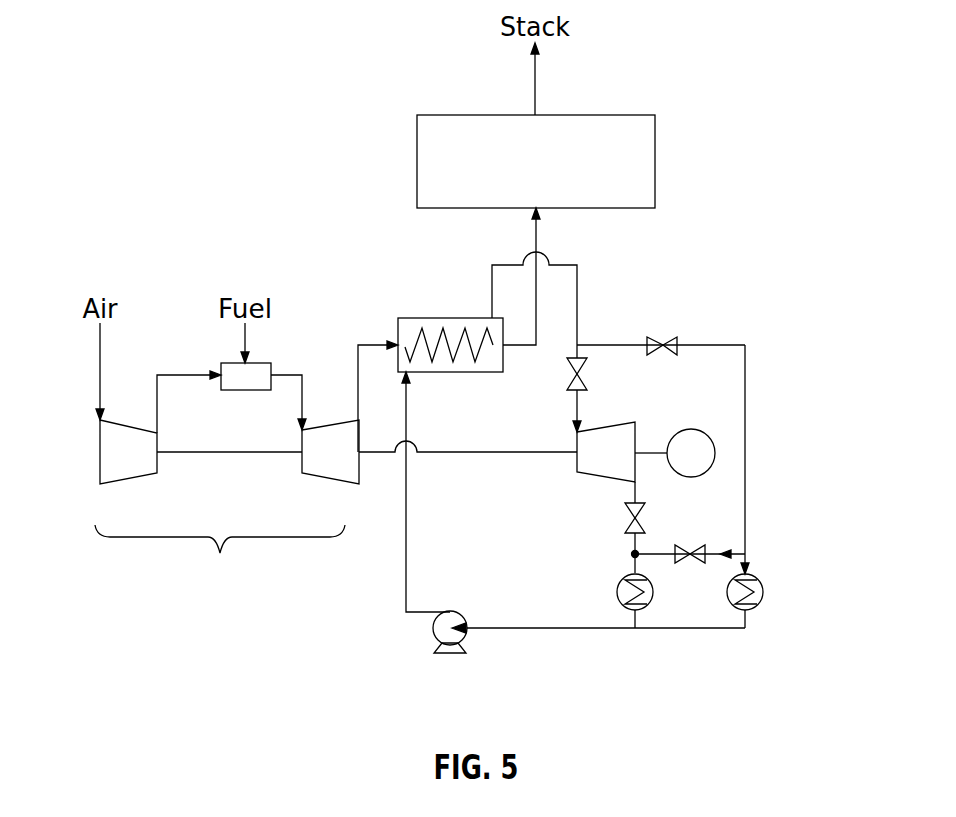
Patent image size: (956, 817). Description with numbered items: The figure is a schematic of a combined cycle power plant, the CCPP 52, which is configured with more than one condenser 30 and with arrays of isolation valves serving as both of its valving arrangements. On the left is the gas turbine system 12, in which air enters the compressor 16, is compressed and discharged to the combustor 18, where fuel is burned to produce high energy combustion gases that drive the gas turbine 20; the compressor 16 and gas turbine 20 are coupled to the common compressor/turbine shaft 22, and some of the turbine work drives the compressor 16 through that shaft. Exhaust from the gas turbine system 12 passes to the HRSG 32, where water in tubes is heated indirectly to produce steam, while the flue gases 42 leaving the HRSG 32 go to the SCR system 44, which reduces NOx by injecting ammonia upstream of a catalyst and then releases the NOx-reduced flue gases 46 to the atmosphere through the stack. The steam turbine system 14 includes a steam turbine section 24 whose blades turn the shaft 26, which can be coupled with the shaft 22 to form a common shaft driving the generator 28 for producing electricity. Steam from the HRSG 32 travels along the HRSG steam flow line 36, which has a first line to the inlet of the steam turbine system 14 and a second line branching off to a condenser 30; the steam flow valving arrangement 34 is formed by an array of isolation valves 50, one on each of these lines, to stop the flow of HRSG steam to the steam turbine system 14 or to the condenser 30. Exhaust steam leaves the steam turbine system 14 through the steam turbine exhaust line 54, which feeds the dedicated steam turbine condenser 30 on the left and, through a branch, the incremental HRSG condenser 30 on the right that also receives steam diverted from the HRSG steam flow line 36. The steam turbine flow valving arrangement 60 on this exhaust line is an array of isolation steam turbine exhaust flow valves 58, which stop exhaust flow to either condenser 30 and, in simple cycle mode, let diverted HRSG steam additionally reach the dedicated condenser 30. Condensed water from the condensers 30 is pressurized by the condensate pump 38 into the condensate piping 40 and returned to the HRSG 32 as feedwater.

The gas turbine system 12 is at (227, 462).
The steam turbine system 14 is at (566, 470).
The compressor 16 is at (113, 480).
The combustor 18 is at (262, 363).
The gas turbine 20 is at (310, 473).
The compressor/turbine shaft 22 is at (232, 453).
The steam turbine section 24 is at (635, 423).
The shaft 26 is at (477, 453).
The generator 28 is at (712, 440).
The condenser 30 is at (760, 577).
The HRSG 32 is at (415, 317).
The steam flow valving arrangement 34 is at (594, 326).
The HRSG steam flow line 36 is at (490, 283).
The condensate pump 38 is at (430, 628).
The condensate piping 40 is at (403, 597).
The flue gases 42 is at (537, 230).
The SCR system 44 is at (655, 160).
The NOx-reduced flue gases 46 is at (537, 92).
The isolation valve 50 is at (660, 340).
The CCPP 52 is at (115, 609).
The steam turbine exhaust line 54 is at (630, 490).
The isolation steam turbine exhaust flow valve 58 is at (630, 518).
The steam turbine flow valving arrangement 60 is at (662, 531).